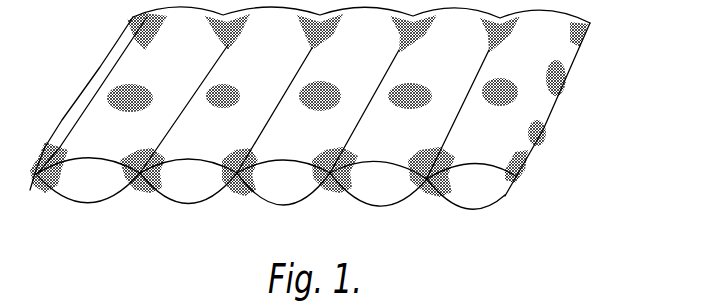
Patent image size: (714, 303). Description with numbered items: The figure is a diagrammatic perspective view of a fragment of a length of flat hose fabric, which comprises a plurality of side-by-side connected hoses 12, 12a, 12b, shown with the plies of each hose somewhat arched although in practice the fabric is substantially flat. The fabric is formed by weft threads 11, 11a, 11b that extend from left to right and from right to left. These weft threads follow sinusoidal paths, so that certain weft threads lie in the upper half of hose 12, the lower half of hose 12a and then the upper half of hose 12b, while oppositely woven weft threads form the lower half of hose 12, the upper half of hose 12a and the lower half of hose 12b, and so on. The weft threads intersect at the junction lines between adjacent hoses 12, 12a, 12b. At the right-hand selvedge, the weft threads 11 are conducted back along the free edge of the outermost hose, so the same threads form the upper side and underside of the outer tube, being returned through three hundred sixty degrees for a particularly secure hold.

The weft thread 11 is at (412, 163).
The weft thread 11a is at (425, 182).
The weft thread 11b is at (547, 130).
The hose 12 is at (83, 197).
The hose 12a is at (190, 197).
The hose 12b is at (282, 197).